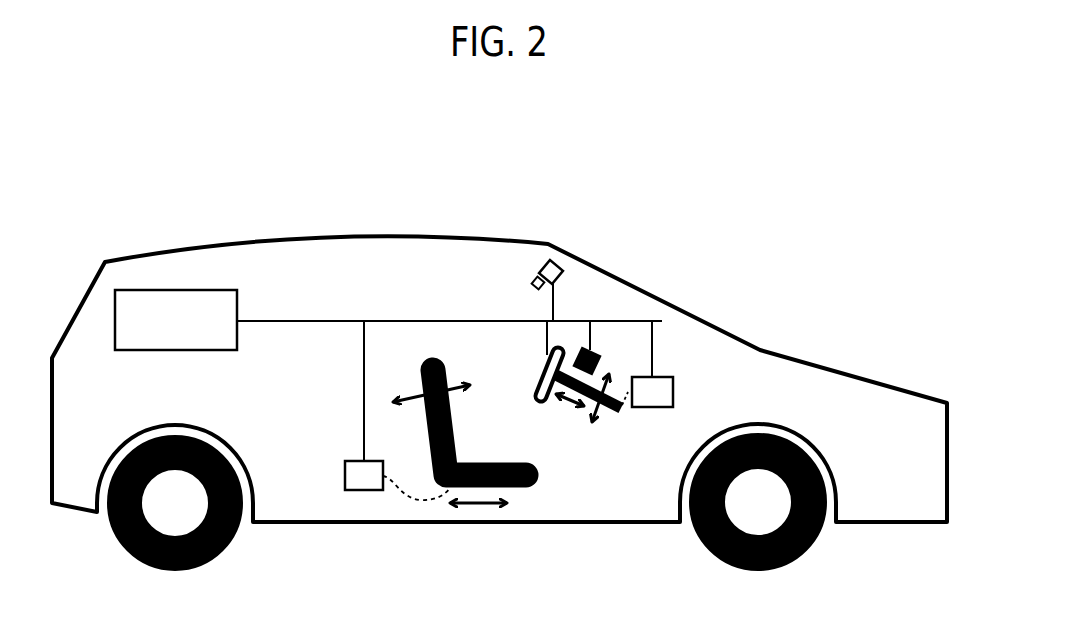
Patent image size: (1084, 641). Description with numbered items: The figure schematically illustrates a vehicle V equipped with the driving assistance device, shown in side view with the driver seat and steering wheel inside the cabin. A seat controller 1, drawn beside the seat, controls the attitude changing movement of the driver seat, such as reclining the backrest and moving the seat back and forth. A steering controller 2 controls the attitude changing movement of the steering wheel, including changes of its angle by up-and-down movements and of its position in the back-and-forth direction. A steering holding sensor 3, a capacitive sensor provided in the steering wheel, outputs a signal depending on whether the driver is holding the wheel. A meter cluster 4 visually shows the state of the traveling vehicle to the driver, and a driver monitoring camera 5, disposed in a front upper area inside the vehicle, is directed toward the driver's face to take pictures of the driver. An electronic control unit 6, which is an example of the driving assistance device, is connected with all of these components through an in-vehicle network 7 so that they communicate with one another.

The seat controller 1 is at (368, 490).
The steering controller 2 is at (673, 393).
The steering holding sensor 3 is at (552, 398).
The meter cluster 4 is at (595, 345).
The driver monitoring camera 5 is at (558, 266).
The electronic control unit (ECU) 6 is at (172, 290).
The in-vehicle network 7 is at (298, 321).
The vehicle V is at (771, 197).